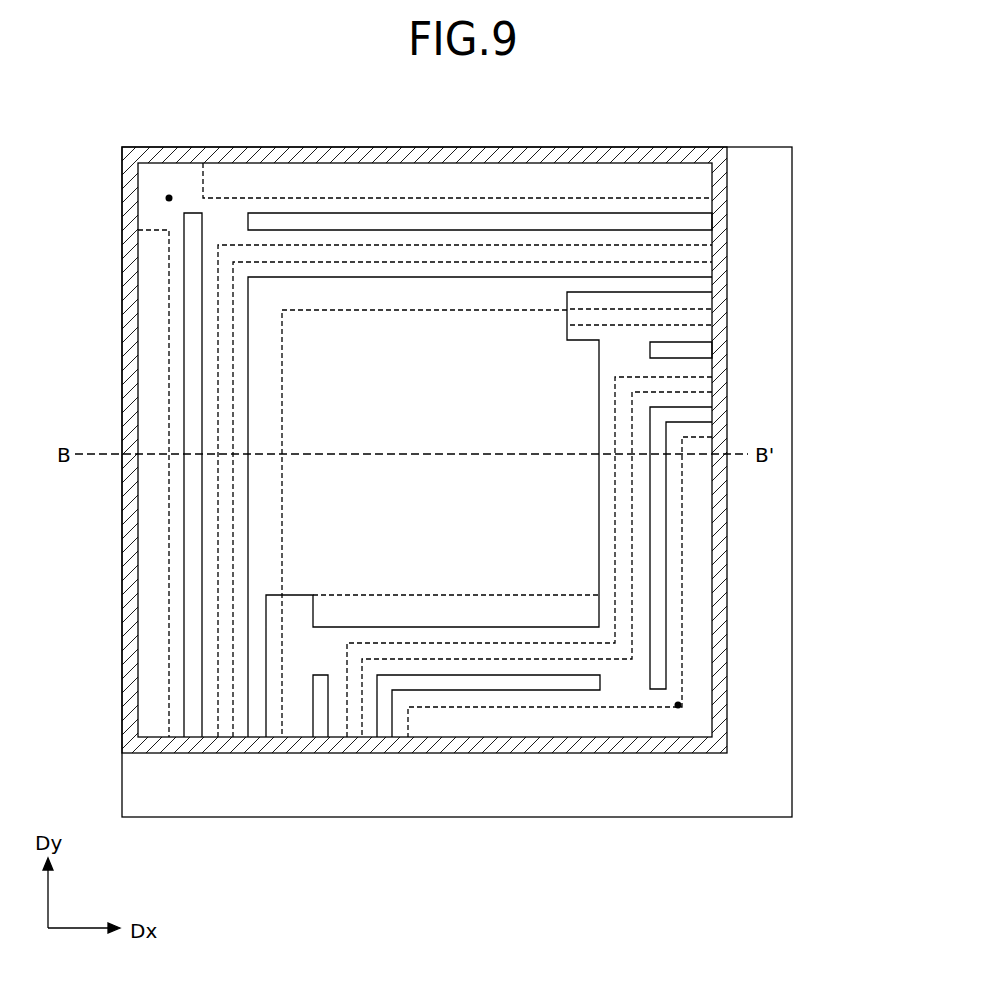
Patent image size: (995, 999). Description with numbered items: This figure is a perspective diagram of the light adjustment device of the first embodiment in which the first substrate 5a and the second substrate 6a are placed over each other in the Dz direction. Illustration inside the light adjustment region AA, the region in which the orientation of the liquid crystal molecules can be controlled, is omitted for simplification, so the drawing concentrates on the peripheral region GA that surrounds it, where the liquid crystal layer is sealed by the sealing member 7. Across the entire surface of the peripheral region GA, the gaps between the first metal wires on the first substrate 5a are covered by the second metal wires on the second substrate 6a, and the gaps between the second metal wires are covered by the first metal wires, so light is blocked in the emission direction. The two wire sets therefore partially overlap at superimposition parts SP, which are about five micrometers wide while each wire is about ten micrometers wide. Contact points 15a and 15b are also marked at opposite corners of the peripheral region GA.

The first substrate 5a is at (762, 147).
The peripheral region GA is at (622, 162).
The sealing member 7 is at (512, 745).
The second substrate 6a is at (248, 147).
The contact hole 15a is at (169, 198).
The contact hole 15b is at (678, 705).
The superimposition part SP is at (695, 363).
The light adjustment region AA is at (525, 422).